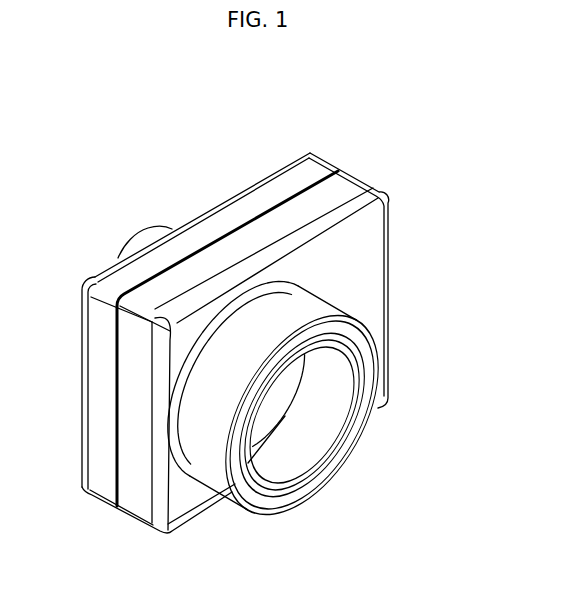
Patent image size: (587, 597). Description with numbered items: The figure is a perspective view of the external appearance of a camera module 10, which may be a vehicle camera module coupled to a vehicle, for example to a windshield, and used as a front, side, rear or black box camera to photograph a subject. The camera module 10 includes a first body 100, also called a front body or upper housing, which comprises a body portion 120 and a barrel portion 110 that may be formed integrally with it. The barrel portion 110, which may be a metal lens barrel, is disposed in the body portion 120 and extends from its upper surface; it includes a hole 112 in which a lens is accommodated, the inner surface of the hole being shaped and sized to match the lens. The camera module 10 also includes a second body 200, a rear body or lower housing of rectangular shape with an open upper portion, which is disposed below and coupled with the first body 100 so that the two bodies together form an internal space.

The camera module 10 is at (56, 118).
The first body 100 is at (307, 338).
The barrel portion 110 is at (314, 430).
The hole 112 is at (311, 413).
The body portion 120 is at (337, 199).
The second body 200 is at (329, 145).